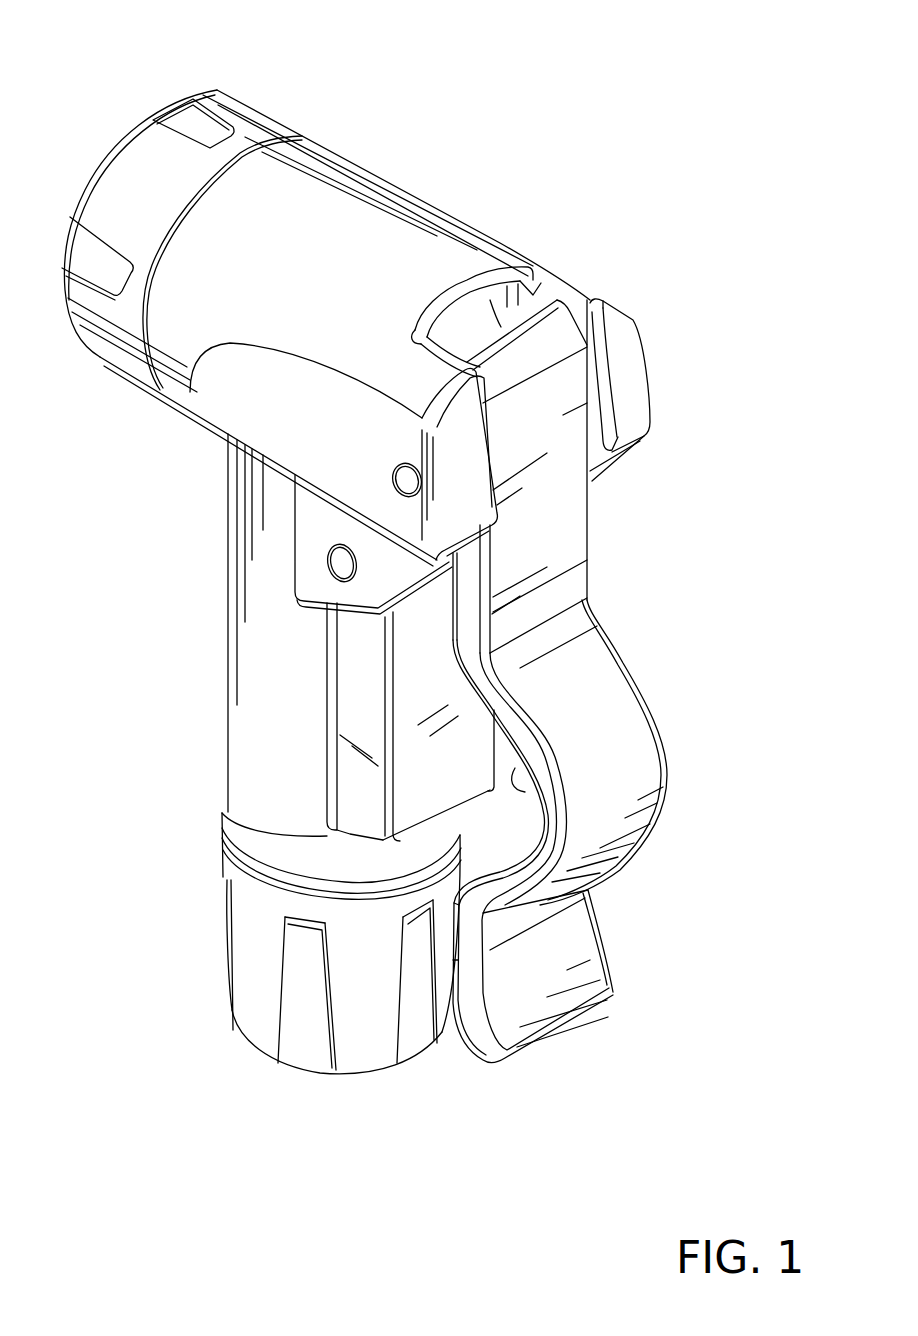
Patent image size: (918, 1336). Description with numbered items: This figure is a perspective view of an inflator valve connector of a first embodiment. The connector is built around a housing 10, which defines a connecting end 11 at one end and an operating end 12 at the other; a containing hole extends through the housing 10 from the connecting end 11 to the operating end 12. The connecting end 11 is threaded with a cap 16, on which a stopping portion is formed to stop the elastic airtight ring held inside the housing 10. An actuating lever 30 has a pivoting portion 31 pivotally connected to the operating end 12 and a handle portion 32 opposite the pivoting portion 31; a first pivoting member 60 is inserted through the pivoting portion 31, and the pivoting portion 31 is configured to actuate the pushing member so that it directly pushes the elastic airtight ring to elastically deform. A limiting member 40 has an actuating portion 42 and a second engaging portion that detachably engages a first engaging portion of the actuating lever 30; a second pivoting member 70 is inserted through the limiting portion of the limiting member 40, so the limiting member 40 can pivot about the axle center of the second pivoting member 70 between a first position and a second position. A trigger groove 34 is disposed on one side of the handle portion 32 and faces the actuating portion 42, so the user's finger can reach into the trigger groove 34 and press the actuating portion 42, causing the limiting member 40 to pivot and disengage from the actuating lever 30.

The housing 10 is at (481, 198).
The connecting end 11 is at (112, 132).
The operating end 12 is at (665, 356).
The cap 16 is at (236, 93).
The actuating lever 30 is at (601, 681).
The pivoting portion 31 is at (550, 517).
The handle portion 32 is at (618, 822).
The trigger groove 34 is at (524, 775).
The limiting member 40 is at (318, 717).
The actuating portion 42 is at (423, 775).
The first pivoting member 60 is at (380, 474).
The second pivoting member 70 is at (323, 562).